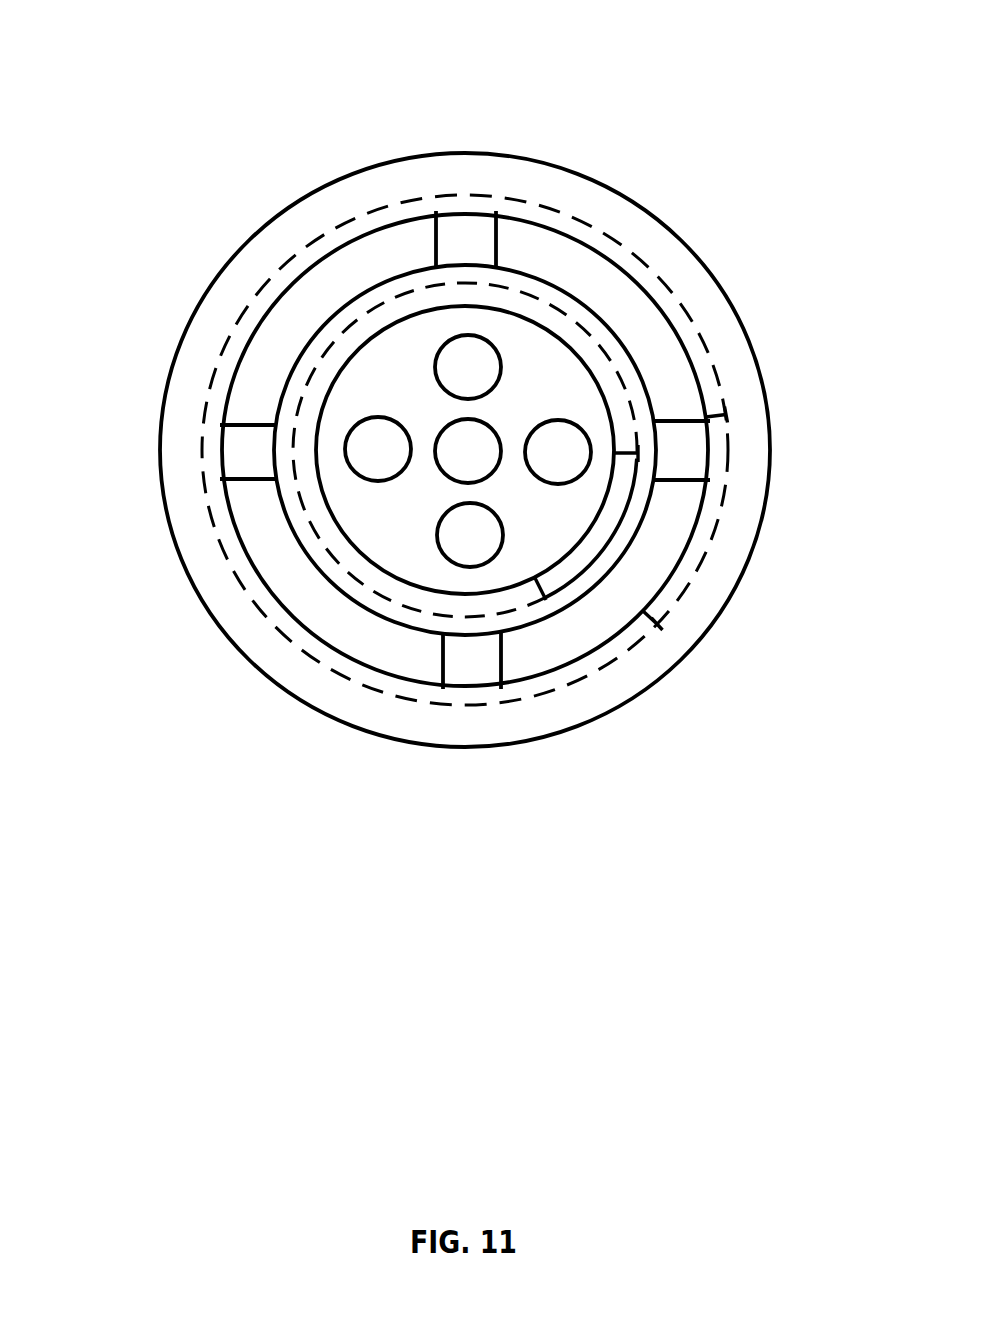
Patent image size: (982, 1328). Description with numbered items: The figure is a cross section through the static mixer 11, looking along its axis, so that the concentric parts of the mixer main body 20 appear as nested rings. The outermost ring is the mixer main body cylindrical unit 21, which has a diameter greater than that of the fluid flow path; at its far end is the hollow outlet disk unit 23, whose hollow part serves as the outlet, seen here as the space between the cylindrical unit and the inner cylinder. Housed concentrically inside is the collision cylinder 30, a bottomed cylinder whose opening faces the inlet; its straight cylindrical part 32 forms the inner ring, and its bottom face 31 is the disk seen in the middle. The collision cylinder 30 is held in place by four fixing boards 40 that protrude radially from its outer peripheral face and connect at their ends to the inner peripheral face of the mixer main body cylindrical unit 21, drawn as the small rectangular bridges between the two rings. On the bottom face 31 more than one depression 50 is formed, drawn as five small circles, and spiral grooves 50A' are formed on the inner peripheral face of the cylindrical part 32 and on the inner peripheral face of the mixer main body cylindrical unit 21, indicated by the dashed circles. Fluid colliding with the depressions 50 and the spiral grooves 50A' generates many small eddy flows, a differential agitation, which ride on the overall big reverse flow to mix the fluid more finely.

The static mixer 11 is at (551, 132).
The mixer main body 20 is at (279, 213).
The mixer main body cylindrical unit 21 is at (640, 665).
The hollow outlet disk unit 23 is at (396, 258).
The collision cylinder 30 is at (382, 621).
The bottom face 31 is at (373, 510).
The cylindrical part 32 is at (283, 517).
The fixing board 40 is at (252, 467).
The depression 50 is at (472, 367).
The spiral groove 50A' is at (453, 450).